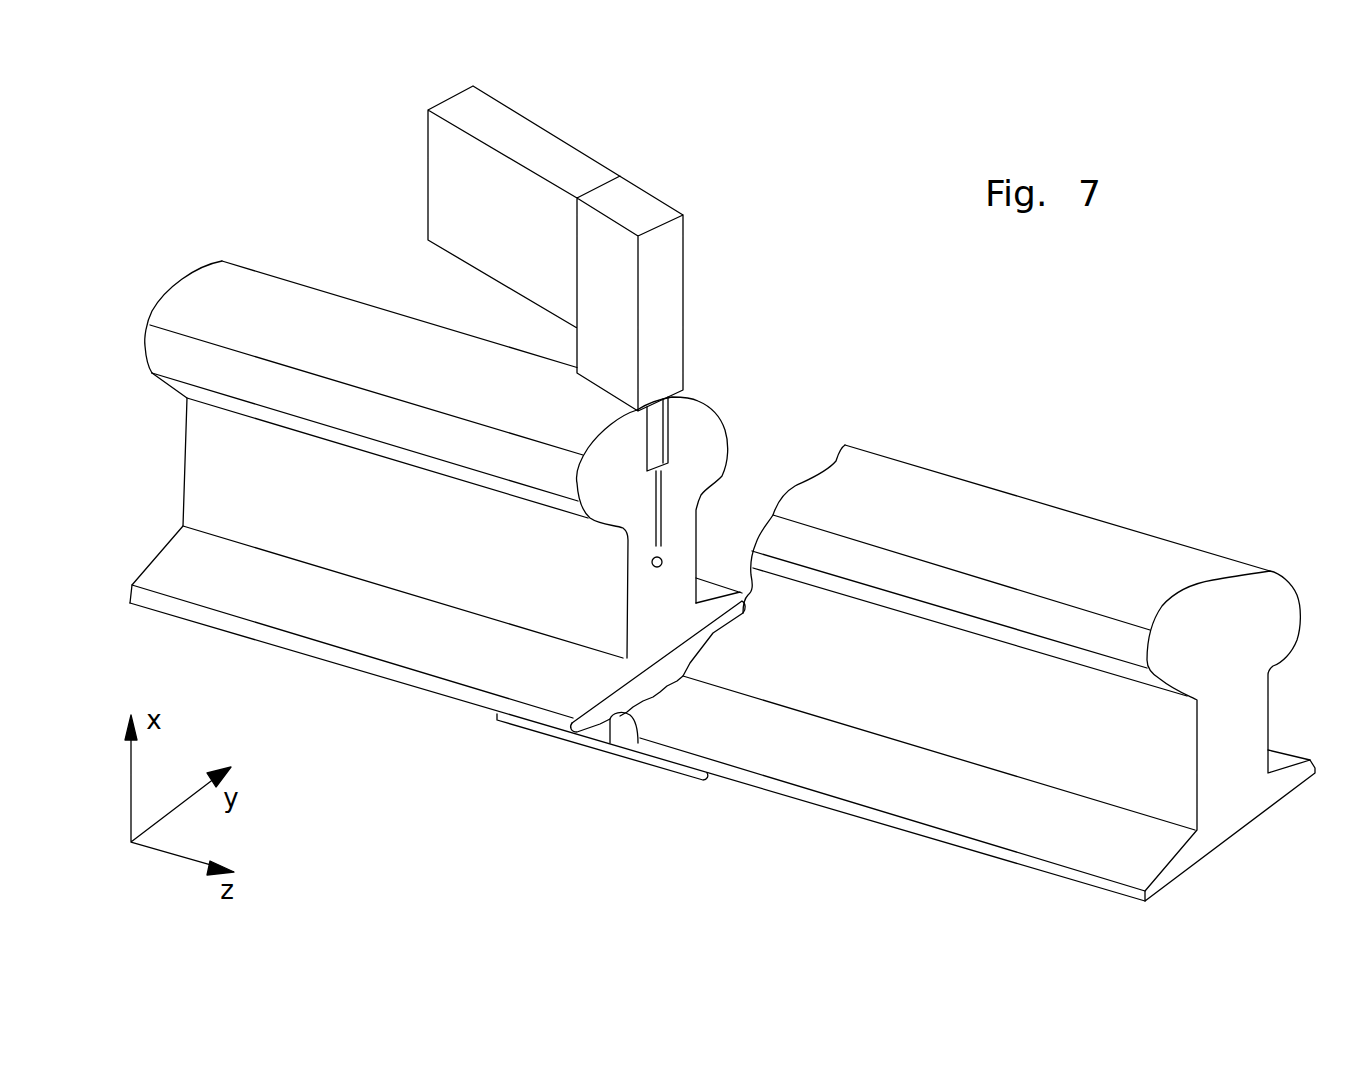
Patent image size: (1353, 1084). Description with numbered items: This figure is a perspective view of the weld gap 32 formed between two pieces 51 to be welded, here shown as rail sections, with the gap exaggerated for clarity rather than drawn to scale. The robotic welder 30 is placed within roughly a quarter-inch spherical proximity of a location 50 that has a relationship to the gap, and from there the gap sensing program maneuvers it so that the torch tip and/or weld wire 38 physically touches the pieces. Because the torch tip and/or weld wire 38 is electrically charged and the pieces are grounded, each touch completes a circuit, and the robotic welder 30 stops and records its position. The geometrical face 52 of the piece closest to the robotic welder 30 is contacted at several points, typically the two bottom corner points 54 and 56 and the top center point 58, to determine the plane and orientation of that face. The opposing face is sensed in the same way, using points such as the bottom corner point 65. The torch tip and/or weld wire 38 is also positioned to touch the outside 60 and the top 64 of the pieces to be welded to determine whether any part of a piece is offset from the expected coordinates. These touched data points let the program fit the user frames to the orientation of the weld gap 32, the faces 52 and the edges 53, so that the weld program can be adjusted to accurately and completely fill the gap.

The robotic welder 30 is at (662, 258).
The torch tip and/or weld wire 38 is at (653, 518).
The top of the pieces to be welded 64 is at (862, 488).
The pieces to be welded 51 is at (915, 502).
The top center point 58 is at (637, 430).
The location 50 is at (661, 552).
The outside of the pieces to be welded 60 is at (505, 455).
The edges 53 is at (575, 590).
The geometrical face of the piece to be welded 52 is at (655, 597).
The bottom corner point 54 is at (593, 703).
The weld gap 32 is at (607, 715).
The bottom corner point 65 is at (624, 722).
The bottom corner point 56 is at (727, 600).